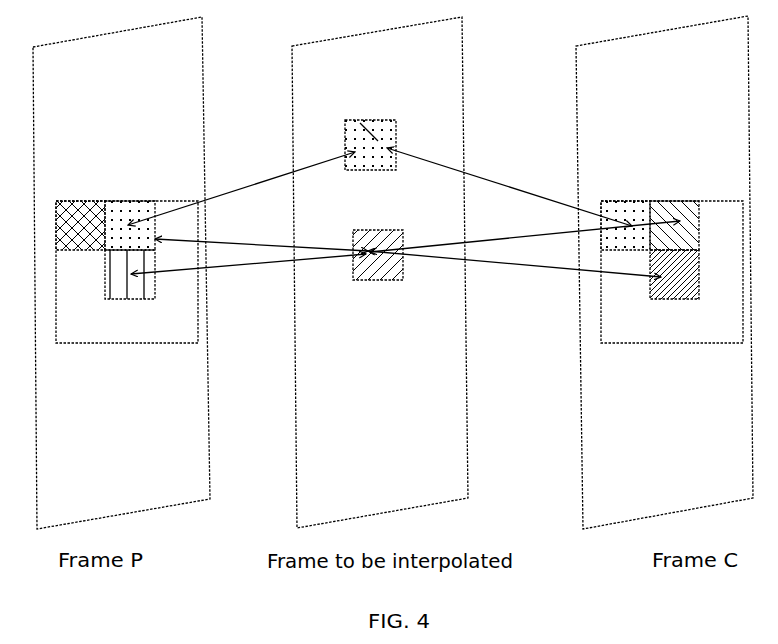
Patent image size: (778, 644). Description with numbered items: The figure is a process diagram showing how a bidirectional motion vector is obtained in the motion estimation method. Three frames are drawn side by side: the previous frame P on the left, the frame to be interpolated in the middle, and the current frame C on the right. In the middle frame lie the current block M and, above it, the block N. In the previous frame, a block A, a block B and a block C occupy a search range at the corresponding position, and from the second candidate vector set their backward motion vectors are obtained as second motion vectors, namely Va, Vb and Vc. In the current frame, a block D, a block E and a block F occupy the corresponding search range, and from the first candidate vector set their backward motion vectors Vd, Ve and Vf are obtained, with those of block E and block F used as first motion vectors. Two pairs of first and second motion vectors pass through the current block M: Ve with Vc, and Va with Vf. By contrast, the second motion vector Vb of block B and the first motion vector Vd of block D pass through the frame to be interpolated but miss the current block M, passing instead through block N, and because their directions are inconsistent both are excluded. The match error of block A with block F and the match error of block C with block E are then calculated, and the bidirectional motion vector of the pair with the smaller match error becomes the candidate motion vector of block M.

The block A is at (80, 225).
The block B is at (130, 225).
The block C is at (130, 274).
The block N is at (370, 145).
The current block M is at (378, 255).
The block D is at (625, 225).
The block E is at (674, 225).
The block F is at (674, 274).
The second motion vector Va is at (261, 232).
The second motion vector Vb is at (241, 188).
The second motion vector Vc is at (248, 275).
The first motion vector Vd is at (509, 187).
The first motion vector Ve is at (525, 234).
The first motion vector Vf is at (514, 271).